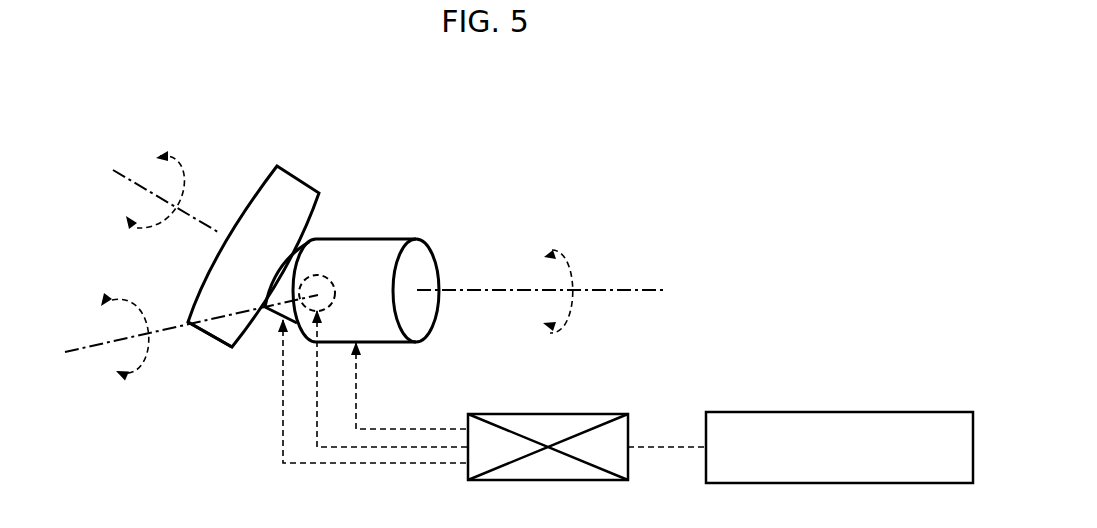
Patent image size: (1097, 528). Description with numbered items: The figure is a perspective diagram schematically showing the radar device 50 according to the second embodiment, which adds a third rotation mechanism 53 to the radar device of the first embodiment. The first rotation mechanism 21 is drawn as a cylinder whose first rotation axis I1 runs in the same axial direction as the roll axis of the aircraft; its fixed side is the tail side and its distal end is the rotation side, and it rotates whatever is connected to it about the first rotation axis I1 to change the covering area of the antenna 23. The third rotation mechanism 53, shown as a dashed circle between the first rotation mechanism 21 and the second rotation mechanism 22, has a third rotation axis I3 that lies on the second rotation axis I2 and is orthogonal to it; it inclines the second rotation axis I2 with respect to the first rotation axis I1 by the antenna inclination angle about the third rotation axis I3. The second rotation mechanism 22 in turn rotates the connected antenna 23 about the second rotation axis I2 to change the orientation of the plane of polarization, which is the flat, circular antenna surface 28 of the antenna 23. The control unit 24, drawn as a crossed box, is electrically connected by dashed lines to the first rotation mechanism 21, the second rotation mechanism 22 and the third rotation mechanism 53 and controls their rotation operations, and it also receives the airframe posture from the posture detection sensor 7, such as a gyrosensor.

The radar device 50 is at (512, 143).
The first rotation mechanism 21 is at (357, 238).
The second rotation mechanism 22 is at (272, 318).
The antenna 23 is at (208, 338).
The antenna surface 28 is at (202, 268).
The third rotation mechanism 53 is at (318, 276).
The control unit 24 is at (560, 414).
The posture detection sensor 7 is at (905, 412).
The first rotation axis I1 is at (628, 290).
The second rotation axis I2 is at (138, 186).
The third rotation axis I3 is at (90, 344).